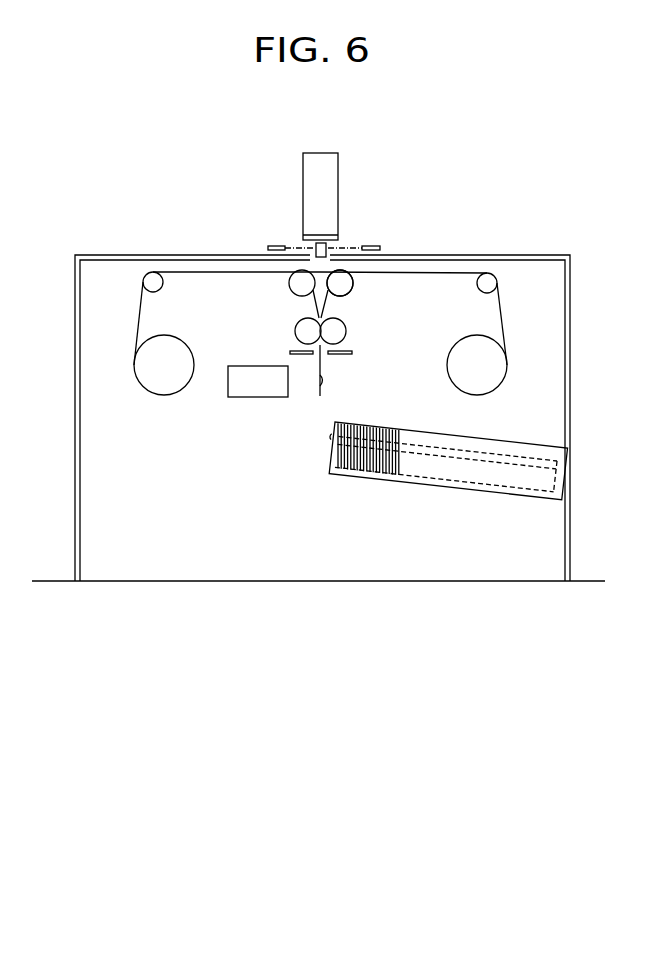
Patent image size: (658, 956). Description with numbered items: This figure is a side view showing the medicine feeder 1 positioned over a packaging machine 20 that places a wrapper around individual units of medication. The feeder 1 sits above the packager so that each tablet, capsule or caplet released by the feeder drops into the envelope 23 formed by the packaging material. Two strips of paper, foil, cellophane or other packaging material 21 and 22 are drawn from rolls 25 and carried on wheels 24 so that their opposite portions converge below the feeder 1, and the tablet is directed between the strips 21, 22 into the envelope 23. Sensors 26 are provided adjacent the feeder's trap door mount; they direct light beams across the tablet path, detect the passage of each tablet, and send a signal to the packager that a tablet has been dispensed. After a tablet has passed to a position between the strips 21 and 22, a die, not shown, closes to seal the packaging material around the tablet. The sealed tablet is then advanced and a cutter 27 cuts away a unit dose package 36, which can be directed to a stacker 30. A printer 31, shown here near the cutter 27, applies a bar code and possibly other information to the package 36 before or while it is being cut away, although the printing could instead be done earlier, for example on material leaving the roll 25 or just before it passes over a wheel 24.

The feeder 1 is at (284, 205).
The packaging machine 20 is at (364, 418).
The packaging material strip 21 is at (227, 317).
The packaging material strip 22 is at (413, 317).
The envelope 23 is at (350, 318).
The wheel 24 is at (394, 259).
The roll 25 is at (316, 380).
The sensor 26 is at (265, 210).
The cutter 27 is at (370, 384).
The stacker 30 is at (482, 488).
The printer 31 is at (192, 424).
The unit dose package 36 is at (256, 427).